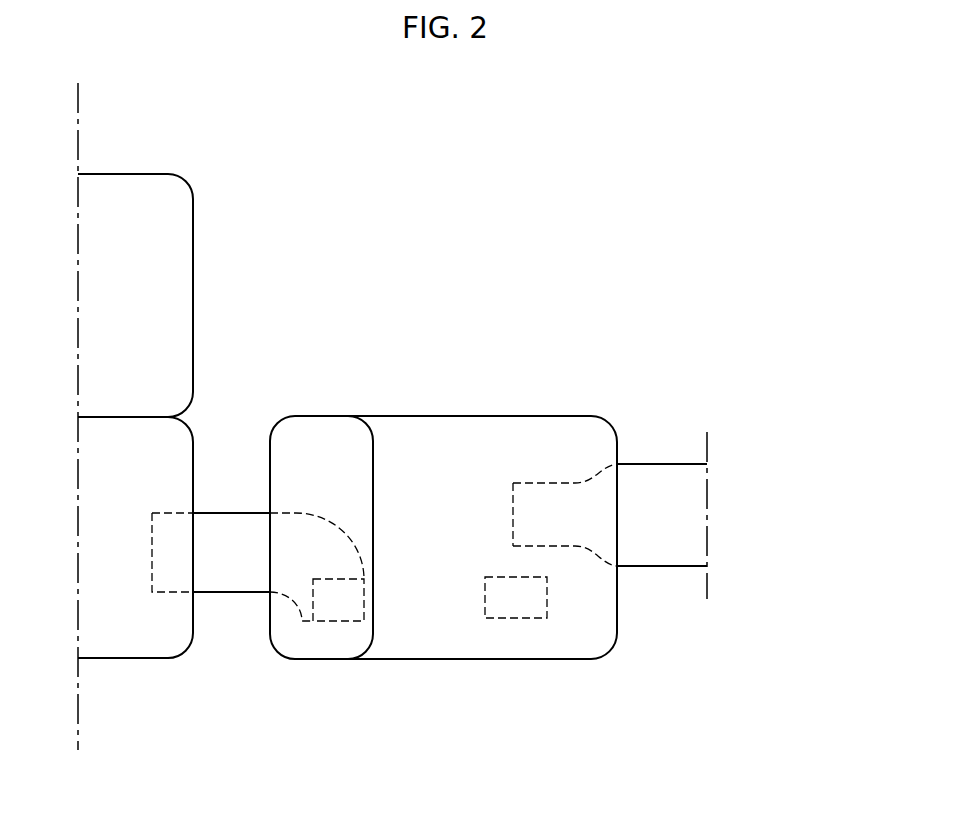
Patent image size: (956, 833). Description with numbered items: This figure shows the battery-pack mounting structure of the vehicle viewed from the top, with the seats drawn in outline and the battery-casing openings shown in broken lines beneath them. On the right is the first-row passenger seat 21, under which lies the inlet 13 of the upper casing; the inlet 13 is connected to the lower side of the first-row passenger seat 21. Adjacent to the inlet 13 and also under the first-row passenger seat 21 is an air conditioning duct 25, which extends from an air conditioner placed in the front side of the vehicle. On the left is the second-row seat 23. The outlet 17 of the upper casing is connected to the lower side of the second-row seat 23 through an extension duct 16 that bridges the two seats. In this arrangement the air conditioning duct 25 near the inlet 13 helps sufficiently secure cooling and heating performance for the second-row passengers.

The inlet 13 is at (515, 618).
The extension duct 16 is at (231, 593).
The outlet 17 is at (334, 621).
The first-row passenger seat 21 is at (540, 411).
The second-row seat 23 is at (122, 664).
The air conditioning duct 25 is at (690, 519).